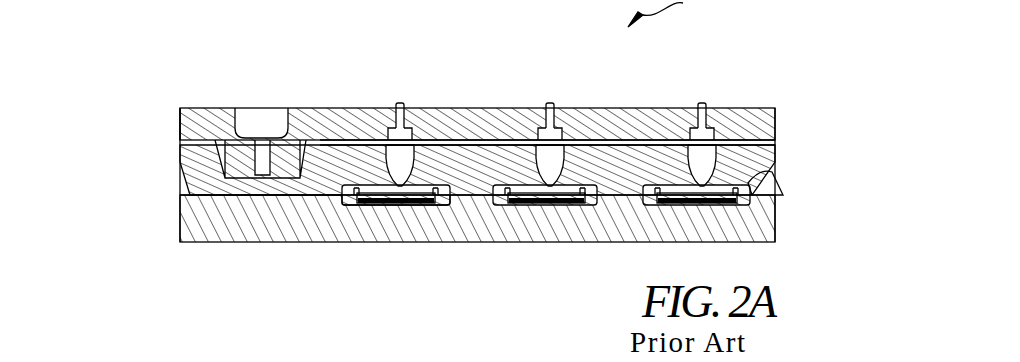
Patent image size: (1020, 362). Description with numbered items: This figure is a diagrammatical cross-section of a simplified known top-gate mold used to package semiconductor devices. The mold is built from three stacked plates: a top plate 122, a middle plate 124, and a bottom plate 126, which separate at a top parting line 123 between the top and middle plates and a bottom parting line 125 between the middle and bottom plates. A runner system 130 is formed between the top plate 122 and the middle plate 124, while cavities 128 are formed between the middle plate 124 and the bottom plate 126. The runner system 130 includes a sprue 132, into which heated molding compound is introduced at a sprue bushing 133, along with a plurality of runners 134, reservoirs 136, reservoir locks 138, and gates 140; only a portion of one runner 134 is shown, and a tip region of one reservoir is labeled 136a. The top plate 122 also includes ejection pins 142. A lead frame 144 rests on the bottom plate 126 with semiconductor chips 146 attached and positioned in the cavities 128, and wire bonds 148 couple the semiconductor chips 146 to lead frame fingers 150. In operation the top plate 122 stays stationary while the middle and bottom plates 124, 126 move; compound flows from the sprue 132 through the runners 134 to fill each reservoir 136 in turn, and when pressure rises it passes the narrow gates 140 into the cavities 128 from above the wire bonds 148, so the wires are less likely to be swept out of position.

The top plate 122 is at (183, 116).
The top parting line 123 is at (180, 135).
The middle plate 124 is at (177, 180).
The bottom parting line 125 is at (183, 195).
The bottom plate 126 is at (185, 237).
The cavities 128 is at (352, 200).
The runner system 130 is at (780, 143).
The sprue 132 is at (307, 148).
The sprue bushing 133 is at (258, 136).
The runners 134 is at (201, 140).
The reservoirs 136 is at (557, 170).
The nozzle tip 136a is at (397, 183).
The reservoir locks 138 is at (404, 180).
The gates 140 is at (458, 138).
The ejection pins 142 is at (556, 105).
The lead frame 144 is at (460, 205).
The semiconductor chips 146 is at (545, 200).
The wire bonds 148 is at (772, 174).
The lead frame fingers 150 is at (583, 203).